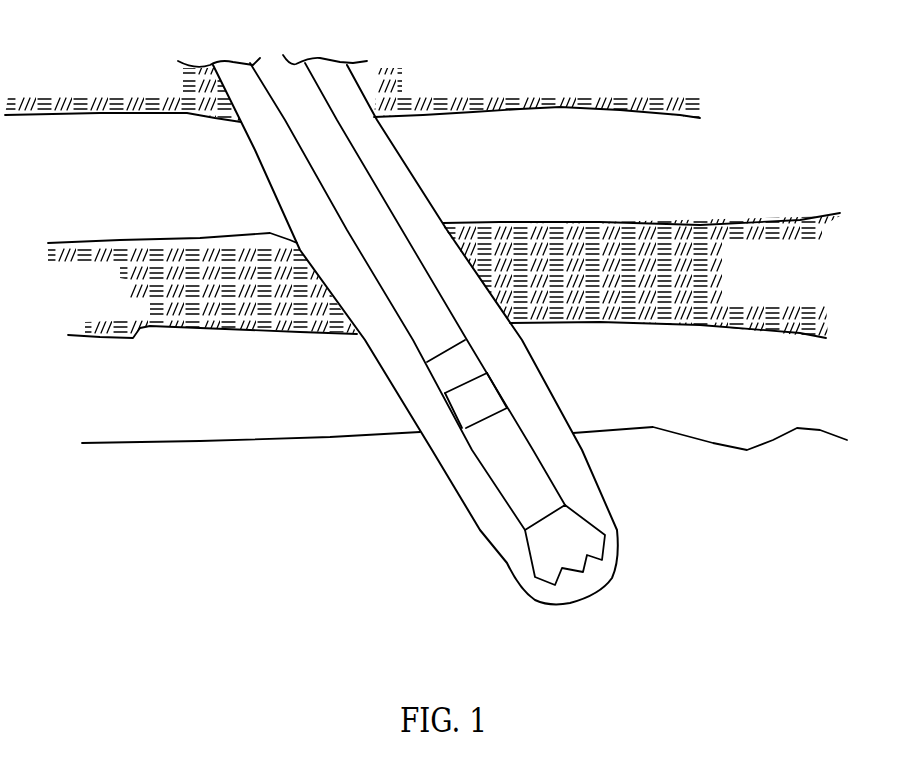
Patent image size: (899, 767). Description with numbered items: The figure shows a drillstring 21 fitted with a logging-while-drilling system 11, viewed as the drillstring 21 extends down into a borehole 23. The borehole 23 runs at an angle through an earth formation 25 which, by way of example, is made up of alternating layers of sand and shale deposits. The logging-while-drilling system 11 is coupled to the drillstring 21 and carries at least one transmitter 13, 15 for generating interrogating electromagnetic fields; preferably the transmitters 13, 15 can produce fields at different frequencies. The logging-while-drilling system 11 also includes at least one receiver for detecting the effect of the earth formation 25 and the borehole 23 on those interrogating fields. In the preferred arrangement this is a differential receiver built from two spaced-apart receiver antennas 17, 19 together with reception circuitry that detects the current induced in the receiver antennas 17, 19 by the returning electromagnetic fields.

The logging-while-drilling system 11 is at (738, 123).
The transmitter 13 is at (350, 235).
The transmitter 15 is at (467, 430).
The receiver antenna 17 is at (427, 362).
The receiver antenna 19 is at (445, 395).
The drillstring 21 is at (357, 150).
The borehole 23 is at (267, 158).
The earth formation 25 is at (63, 300).